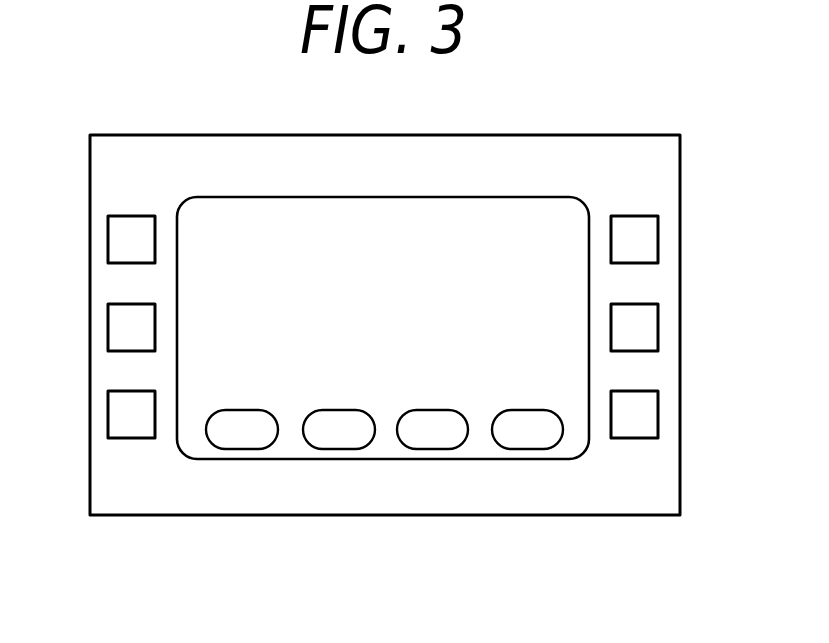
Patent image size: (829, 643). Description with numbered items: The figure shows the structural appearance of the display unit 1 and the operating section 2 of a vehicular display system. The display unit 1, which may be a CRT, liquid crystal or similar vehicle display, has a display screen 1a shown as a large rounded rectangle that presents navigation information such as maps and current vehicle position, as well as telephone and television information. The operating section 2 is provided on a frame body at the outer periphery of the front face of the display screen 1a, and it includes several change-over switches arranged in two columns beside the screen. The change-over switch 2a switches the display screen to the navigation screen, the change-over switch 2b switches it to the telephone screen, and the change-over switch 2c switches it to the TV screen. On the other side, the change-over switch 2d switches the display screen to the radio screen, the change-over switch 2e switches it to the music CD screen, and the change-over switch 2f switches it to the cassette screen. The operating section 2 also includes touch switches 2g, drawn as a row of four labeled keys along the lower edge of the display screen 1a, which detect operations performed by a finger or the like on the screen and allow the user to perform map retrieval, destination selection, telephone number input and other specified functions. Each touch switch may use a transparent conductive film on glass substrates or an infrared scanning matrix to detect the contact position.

The display unit 1 is at (569, 134).
The display screen 1a is at (519, 220).
The operating section 2 is at (472, 153).
The change-over switch 2a is at (650, 237).
The change-over switch 2b is at (650, 326).
The change-over switch 2c is at (650, 413).
The change-over switch 2d is at (115, 240).
The change-over switch 2e is at (115, 331).
The change-over switch 2f is at (115, 418).
The touch switches 2g is at (238, 449).